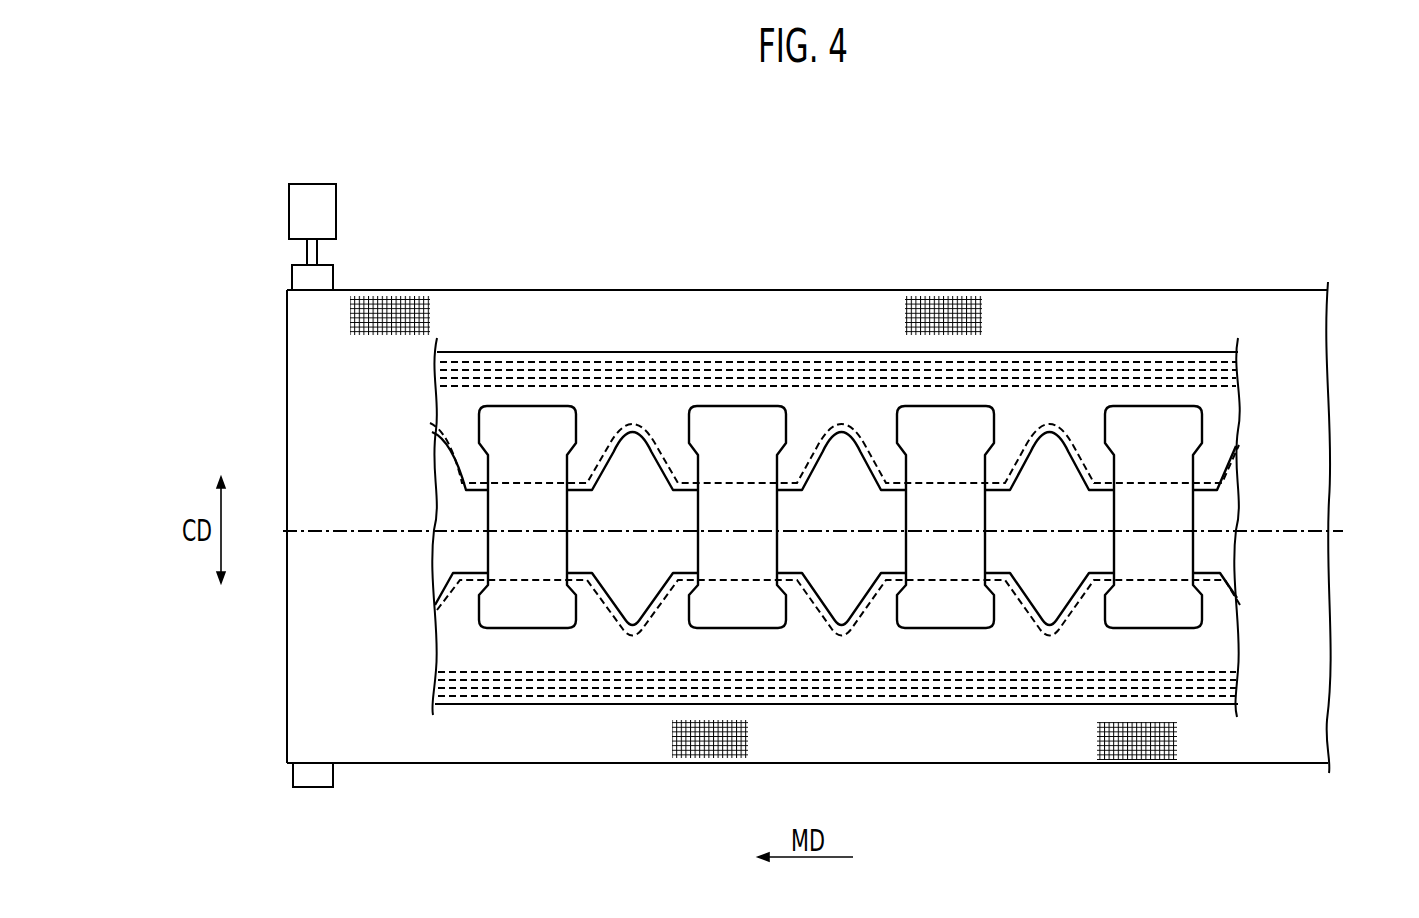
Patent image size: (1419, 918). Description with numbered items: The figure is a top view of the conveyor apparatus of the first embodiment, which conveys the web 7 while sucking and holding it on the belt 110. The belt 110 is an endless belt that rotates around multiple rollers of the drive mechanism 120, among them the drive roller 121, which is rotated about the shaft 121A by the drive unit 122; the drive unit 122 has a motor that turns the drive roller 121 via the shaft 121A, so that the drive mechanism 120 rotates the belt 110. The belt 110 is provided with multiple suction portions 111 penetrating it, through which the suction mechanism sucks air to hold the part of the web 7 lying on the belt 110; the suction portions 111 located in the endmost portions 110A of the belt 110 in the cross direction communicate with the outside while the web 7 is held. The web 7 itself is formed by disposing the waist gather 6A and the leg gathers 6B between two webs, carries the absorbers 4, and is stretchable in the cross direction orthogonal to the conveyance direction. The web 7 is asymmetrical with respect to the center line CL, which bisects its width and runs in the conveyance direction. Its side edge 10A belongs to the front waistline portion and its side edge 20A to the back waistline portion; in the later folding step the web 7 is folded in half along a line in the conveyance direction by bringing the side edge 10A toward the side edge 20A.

The belt 110 is at (595, 291).
The endmost portion of the belt 110A is at (610, 765).
The drive mechanism 120 is at (273, 475).
The drive unit 122 is at (311, 198).
The shaft 121A is at (308, 252).
The drive roller 121 is at (310, 780).
The suction portion 111 is at (398, 298).
The side edge of the back waistline portion 20A is at (1163, 353).
The side edge of the front waistline portion 10A is at (1200, 683).
The waist gather 6A is at (1025, 365).
The leg gather 6B is at (1070, 620).
The absorber 4 is at (742, 418).
The web 7 is at (850, 408).
The center line CL is at (1298, 533).